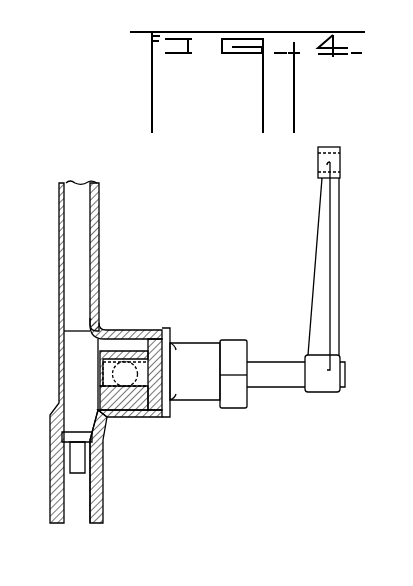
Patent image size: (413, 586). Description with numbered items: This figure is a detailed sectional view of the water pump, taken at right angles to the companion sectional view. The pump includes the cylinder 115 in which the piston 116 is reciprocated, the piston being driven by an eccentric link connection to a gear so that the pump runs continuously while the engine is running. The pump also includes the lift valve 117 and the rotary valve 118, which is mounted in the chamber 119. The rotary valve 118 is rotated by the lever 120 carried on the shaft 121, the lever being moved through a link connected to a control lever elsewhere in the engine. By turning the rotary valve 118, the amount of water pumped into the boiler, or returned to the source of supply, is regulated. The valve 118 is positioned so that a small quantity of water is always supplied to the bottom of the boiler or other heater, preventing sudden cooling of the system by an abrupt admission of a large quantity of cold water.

The cylinder 115 is at (83, 217).
The piston 116 is at (75, 298).
The lift valve 117 is at (78, 457).
The rotary valve 118 is at (143, 383).
The chamber 119 is at (128, 335).
The lever 120 is at (335, 275).
The shaft 121 is at (283, 380).